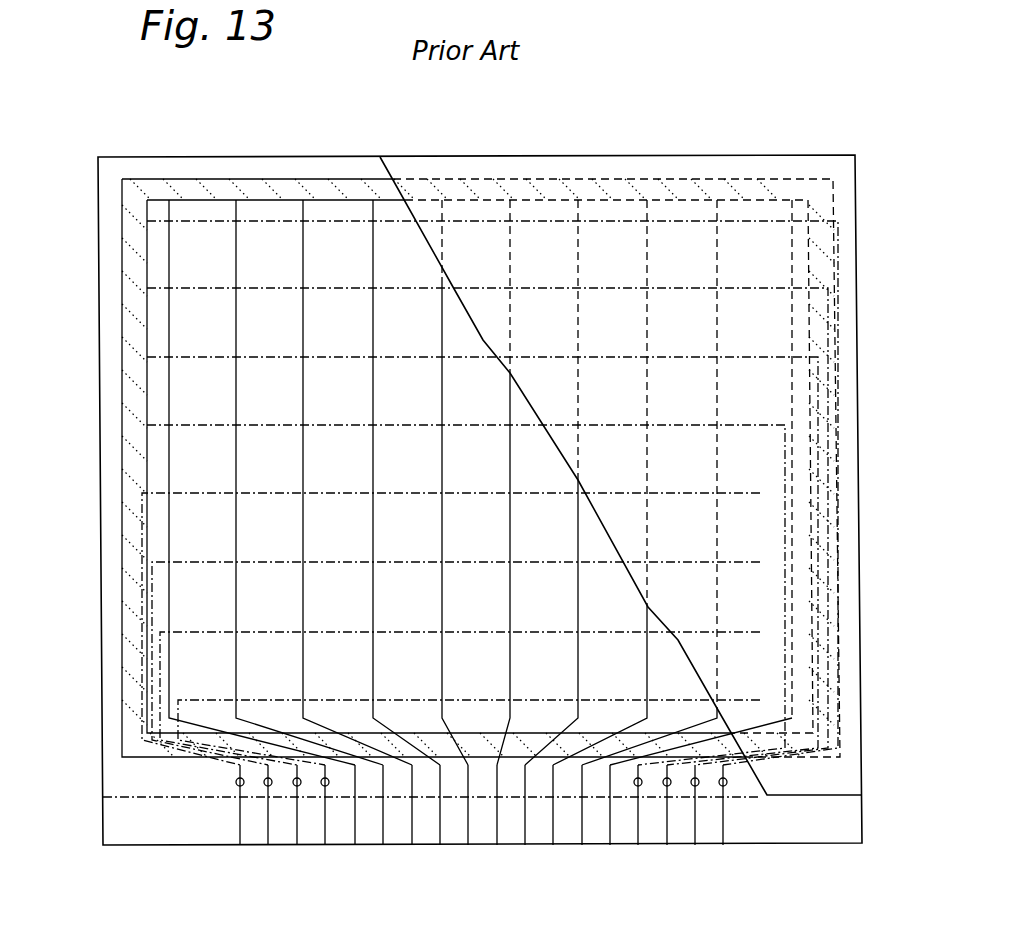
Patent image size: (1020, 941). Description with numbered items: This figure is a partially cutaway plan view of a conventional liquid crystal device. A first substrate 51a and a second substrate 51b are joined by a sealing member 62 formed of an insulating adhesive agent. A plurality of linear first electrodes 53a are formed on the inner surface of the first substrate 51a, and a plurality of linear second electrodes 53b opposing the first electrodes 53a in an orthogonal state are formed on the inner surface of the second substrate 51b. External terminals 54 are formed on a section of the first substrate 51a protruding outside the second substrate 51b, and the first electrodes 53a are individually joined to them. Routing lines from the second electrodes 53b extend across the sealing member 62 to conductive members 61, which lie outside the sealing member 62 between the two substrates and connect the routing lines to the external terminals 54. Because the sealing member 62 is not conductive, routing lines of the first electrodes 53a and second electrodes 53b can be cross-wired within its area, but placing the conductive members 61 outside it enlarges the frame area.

The first substrate 51a is at (112, 208).
The second substrate 51b is at (843, 190).
The first electrodes 53a is at (370, 245).
The second electrodes 53b is at (255, 490).
The external terminals 54 is at (271, 832).
The conductive members 61 is at (240, 786).
The sealing member 62 is at (125, 449).